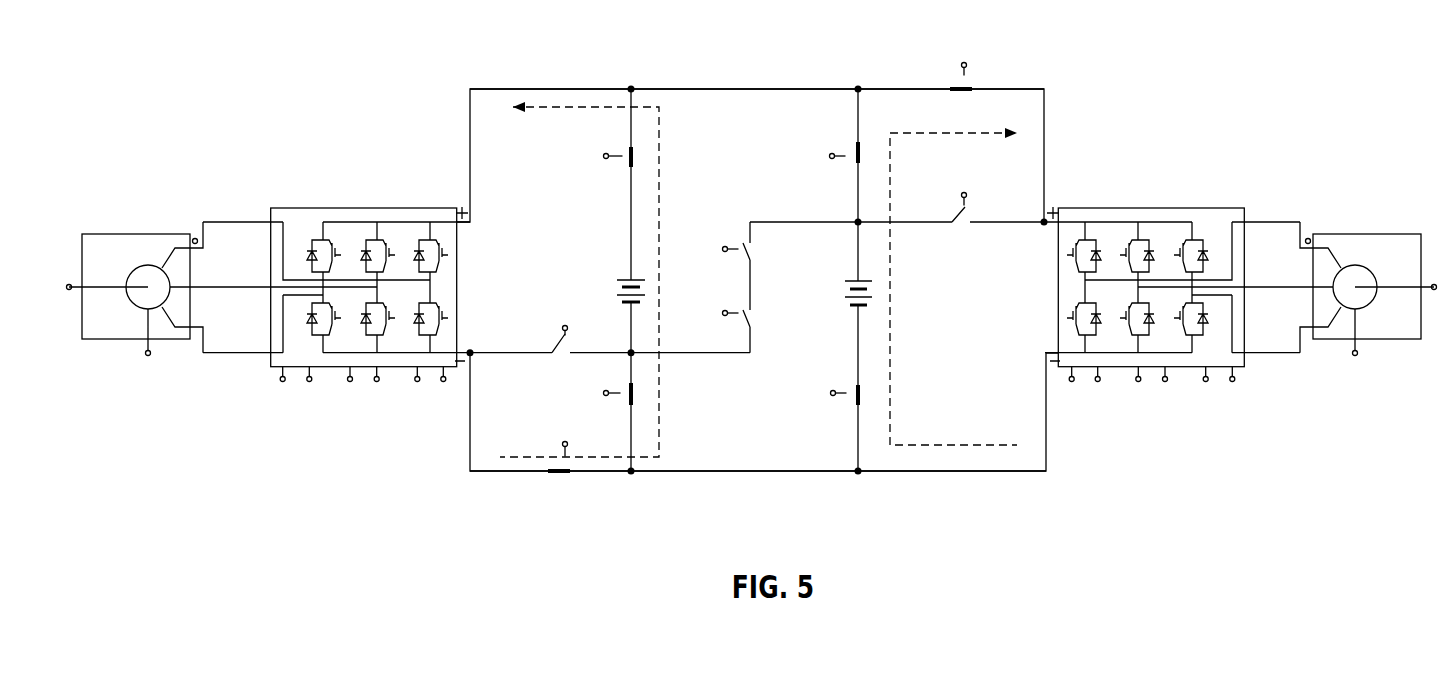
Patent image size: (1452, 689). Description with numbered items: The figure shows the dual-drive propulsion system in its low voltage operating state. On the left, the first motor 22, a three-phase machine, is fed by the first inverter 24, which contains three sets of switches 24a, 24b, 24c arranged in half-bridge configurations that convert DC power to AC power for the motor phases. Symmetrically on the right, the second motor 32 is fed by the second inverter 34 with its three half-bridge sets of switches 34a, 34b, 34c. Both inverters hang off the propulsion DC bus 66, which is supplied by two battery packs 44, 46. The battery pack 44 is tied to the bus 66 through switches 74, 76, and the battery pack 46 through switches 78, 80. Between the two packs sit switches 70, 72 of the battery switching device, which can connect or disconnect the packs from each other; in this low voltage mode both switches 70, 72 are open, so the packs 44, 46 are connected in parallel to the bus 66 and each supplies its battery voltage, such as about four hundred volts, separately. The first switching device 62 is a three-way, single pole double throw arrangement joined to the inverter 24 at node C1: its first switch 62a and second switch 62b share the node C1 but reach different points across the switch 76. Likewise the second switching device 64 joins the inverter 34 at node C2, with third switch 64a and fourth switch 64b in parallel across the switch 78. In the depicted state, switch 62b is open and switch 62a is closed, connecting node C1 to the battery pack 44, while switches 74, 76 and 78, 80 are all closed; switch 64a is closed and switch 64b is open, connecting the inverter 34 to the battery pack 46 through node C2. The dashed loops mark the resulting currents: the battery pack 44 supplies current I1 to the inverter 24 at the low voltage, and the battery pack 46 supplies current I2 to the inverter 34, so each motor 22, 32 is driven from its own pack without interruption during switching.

The first motor 22 is at (173, 233).
The first inverter 24 is at (363, 302).
The set of switches 24a is at (317, 342).
The set of switches 24b is at (368, 342).
The set of switches 24c is at (423, 342).
The second motor 32 is at (1320, 233).
The second inverter 34 is at (1148, 303).
The set of switches 34a is at (1092, 338).
The set of switches 34b is at (1145, 338).
The set of switches 34c is at (1198, 338).
The battery pack 44 is at (628, 280).
The battery pack 46 is at (855, 282).
The first switching device 62 is at (539, 392).
The first switch 62a is at (558, 460).
The second switch 62b is at (553, 350).
The second switching device 64 is at (987, 120).
The third switch 64a is at (957, 87).
The fourth switch 64b is at (958, 215).
The propulsion DC bus 66 is at (752, 471).
The switch 70 is at (756, 266).
The switch 72 is at (756, 332).
The switch 74 is at (628, 157).
The switch 76 is at (635, 393).
The switch 78 is at (855, 160).
The switch 80 is at (855, 400).
The node C1 is at (472, 355).
The node C2 is at (1046, 219).
The current I1 is at (596, 279).
The current I2 is at (953, 286).